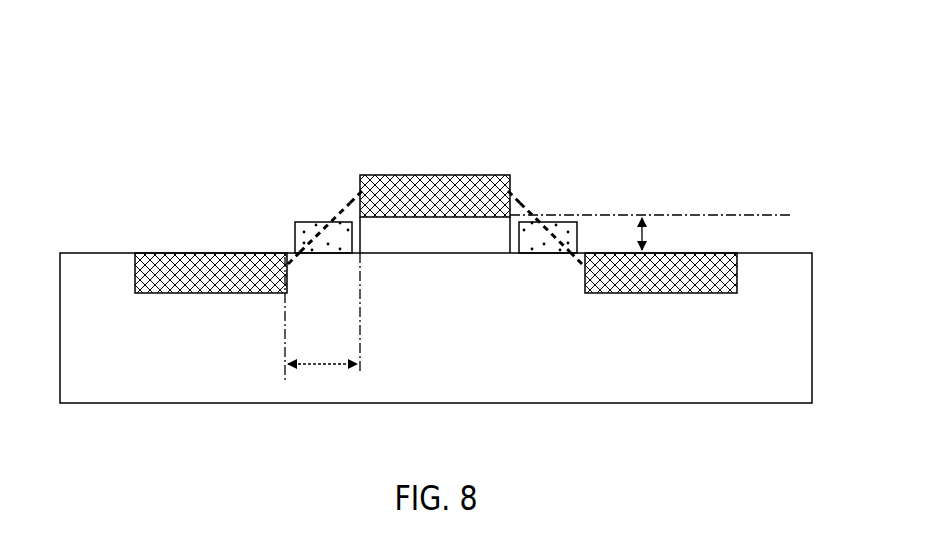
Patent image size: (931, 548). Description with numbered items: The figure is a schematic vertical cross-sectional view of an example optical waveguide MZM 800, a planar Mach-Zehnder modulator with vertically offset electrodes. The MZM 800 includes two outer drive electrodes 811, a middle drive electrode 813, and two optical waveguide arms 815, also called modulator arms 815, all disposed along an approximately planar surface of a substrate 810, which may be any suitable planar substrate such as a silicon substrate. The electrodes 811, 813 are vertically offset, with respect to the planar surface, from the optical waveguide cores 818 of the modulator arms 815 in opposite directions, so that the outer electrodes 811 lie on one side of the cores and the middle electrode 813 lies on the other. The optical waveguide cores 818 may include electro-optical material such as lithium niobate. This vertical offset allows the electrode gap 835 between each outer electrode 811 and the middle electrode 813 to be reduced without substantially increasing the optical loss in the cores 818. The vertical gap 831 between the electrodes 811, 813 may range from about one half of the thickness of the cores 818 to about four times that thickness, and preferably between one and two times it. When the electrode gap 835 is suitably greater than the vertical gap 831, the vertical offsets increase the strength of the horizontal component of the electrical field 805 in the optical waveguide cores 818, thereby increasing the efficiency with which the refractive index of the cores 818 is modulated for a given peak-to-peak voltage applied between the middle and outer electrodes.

The optical waveguide MZM 800 is at (408, 26).
The electrical field 805 is at (330, 228).
The substrate 810 is at (436, 328).
The outer drive electrodes 811 is at (192, 252).
The middle drive electrode 813 is at (435, 176).
The optical waveguide arms 815 is at (310, 180).
The optical waveguide cores 818 is at (320, 257).
The vertical gap 831 is at (647, 242).
The electrode gap 835 is at (318, 367).